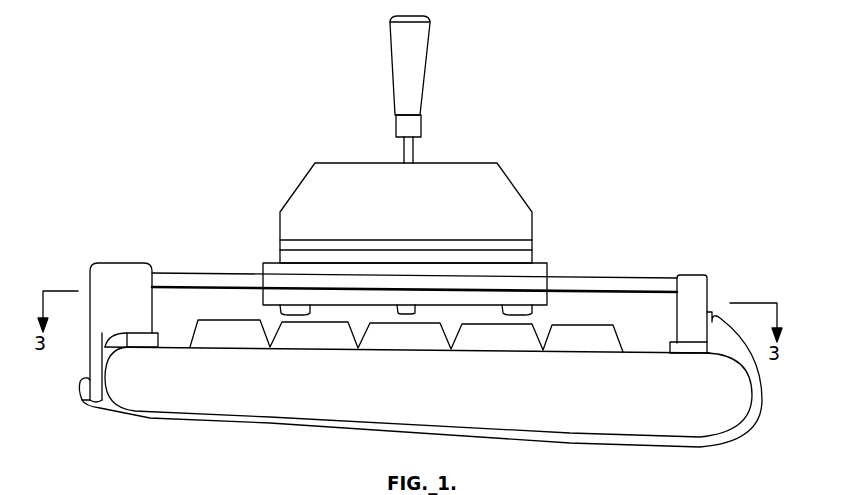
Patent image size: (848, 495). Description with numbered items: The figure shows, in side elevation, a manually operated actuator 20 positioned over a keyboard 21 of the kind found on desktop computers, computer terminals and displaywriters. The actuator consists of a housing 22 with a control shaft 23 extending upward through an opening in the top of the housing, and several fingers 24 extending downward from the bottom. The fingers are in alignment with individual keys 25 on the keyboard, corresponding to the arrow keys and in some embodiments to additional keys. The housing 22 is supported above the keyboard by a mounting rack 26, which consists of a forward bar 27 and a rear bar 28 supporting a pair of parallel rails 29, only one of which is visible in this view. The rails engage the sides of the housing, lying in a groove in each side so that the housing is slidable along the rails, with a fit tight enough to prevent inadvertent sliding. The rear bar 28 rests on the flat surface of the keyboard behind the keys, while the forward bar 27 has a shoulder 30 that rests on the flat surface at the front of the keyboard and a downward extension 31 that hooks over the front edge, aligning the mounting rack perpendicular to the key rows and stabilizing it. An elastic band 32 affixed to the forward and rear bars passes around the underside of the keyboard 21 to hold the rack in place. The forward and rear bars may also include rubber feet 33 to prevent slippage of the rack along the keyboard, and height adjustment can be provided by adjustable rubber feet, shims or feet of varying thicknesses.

The manually operated actuator 20 is at (241, 157).
The keyboard 21 is at (727, 403).
The housing 22 is at (627, 162).
The control shaft 23 is at (427, 62).
The fingers 24 is at (278, 311).
The keys 25 is at (312, 335).
The mounting rack 26 is at (120, 244).
The forward bar 27 is at (153, 313).
The rear bar 28 is at (707, 287).
The rails 29 is at (571, 277).
The shoulder 30 is at (105, 341).
The downward extension 31 is at (88, 374).
The elastic band 32 is at (760, 422).
The rubber feet 33 is at (160, 343).